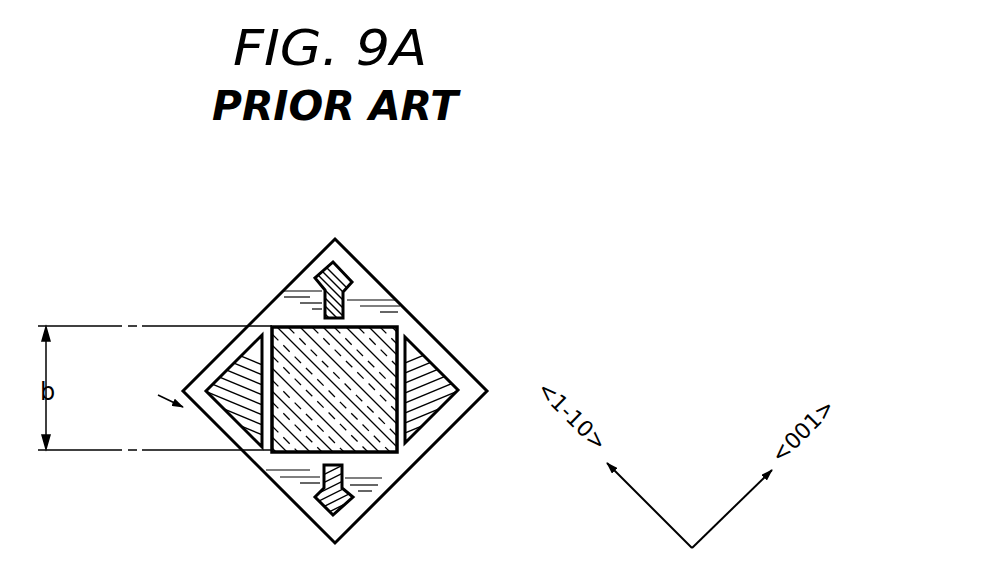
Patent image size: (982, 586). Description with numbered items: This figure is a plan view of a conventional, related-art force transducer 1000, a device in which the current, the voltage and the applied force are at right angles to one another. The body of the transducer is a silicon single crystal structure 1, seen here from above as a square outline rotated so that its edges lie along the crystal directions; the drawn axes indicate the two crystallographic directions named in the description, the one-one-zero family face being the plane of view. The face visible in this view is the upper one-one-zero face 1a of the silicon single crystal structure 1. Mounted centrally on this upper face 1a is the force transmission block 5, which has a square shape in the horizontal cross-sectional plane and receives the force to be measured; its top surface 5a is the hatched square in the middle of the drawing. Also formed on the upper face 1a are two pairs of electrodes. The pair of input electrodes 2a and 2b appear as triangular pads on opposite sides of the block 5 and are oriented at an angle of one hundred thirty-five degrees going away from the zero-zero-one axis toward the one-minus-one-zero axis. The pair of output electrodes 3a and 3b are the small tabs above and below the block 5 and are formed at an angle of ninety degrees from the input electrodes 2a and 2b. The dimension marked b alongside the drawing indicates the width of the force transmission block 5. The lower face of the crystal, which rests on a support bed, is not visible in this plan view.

The silicon single crystal structure 1 is at (455, 417).
The upper (110) face 1a is at (280, 300).
The input electrode 2a is at (430, 380).
The input electrode 2b is at (233, 380).
The output electrode 3a is at (360, 510).
The output electrode 3b is at (328, 272).
The force transmission block 5 is at (287, 456).
The surface of central element 5a is at (377, 337).
The force transducer 1000 is at (138, 394).